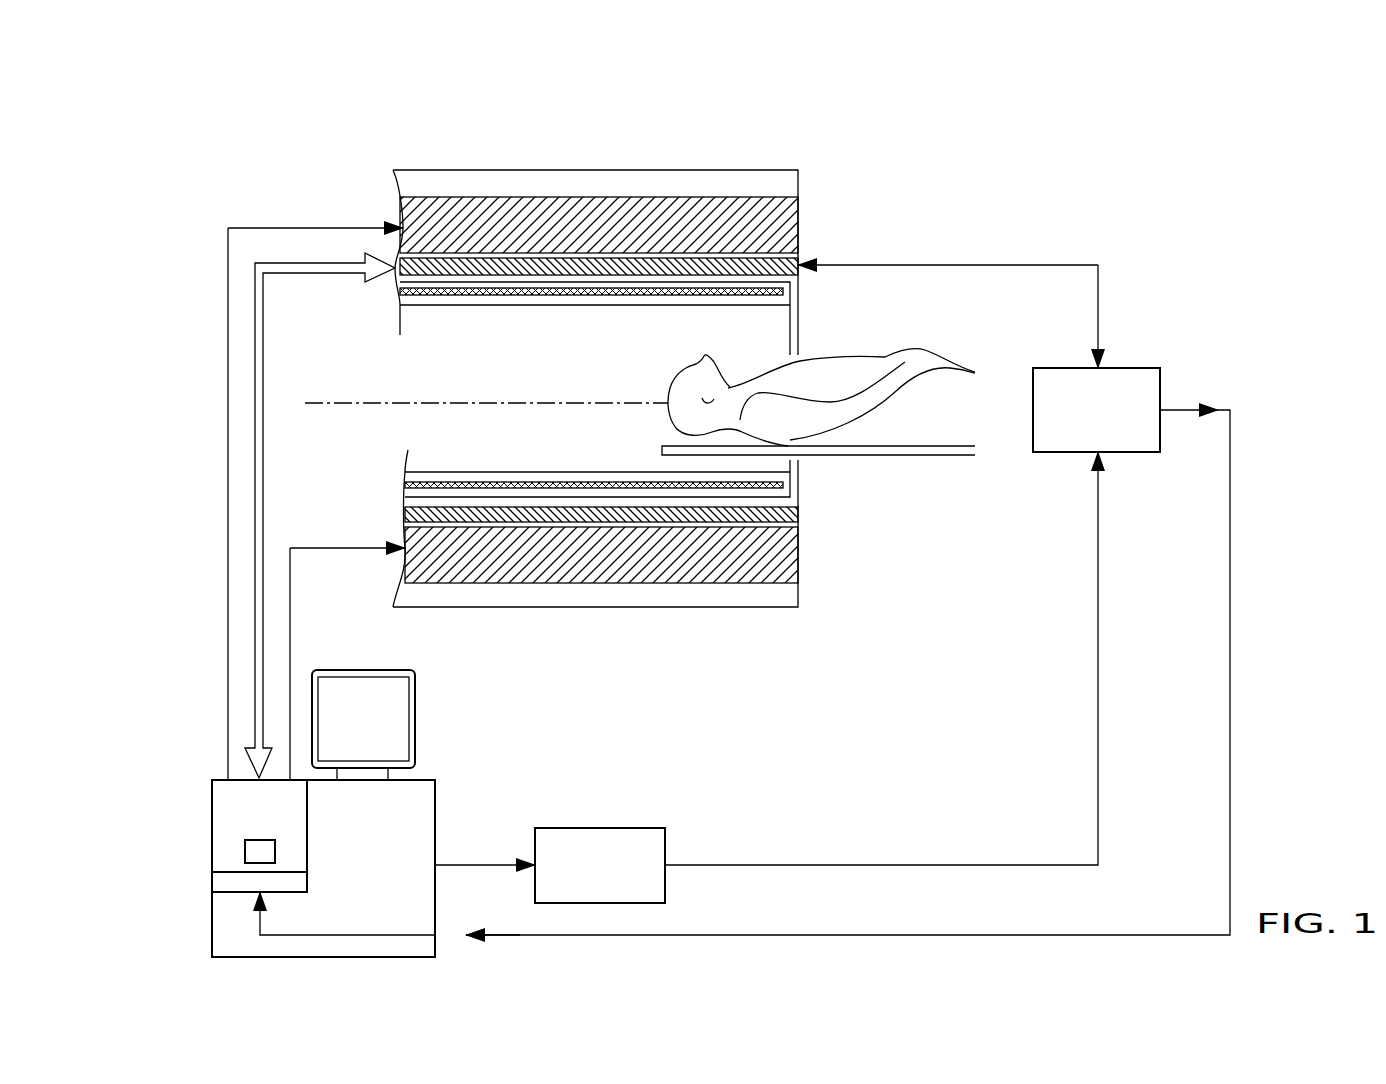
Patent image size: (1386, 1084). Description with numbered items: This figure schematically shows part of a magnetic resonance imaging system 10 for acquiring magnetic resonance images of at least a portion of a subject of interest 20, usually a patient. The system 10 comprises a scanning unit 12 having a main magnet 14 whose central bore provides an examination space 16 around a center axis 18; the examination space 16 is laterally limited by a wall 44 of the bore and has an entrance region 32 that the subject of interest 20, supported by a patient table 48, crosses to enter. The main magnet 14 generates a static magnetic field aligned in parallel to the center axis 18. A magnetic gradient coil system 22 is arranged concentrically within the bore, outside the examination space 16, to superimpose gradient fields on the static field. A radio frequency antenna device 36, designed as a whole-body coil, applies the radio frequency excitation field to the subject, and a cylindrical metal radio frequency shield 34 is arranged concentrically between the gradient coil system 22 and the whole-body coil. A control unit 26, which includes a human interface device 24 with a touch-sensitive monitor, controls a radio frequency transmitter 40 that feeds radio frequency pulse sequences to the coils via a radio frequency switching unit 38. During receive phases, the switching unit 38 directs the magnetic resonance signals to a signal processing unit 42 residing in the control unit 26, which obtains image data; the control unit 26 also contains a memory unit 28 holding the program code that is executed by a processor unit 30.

The magnetic resonance imaging system 10 is at (334, 128).
The scanning unit 12 is at (805, 163).
The main magnet 14 is at (488, 218).
The examination space 16 is at (545, 362).
The center axis 18 is at (353, 403).
The subject of interest 20 is at (835, 375).
The magnetic gradient coil system 22 is at (553, 267).
The human interface device 24 is at (430, 722).
The control unit 26 is at (197, 803).
The memory unit 28 is at (191, 894).
The processor unit 30 is at (253, 851).
The entrance region 32 is at (1097, 222).
The radio frequency shield 34 is at (635, 282).
The radio frequency antenna device 36 is at (707, 288).
The radio frequency switching unit 38 is at (1082, 424).
The radio frequency transmitter 40 is at (586, 878).
The signal processing unit 42 is at (246, 823).
The wall of the central bore 44 is at (490, 318).
The patient table 48 is at (873, 458).